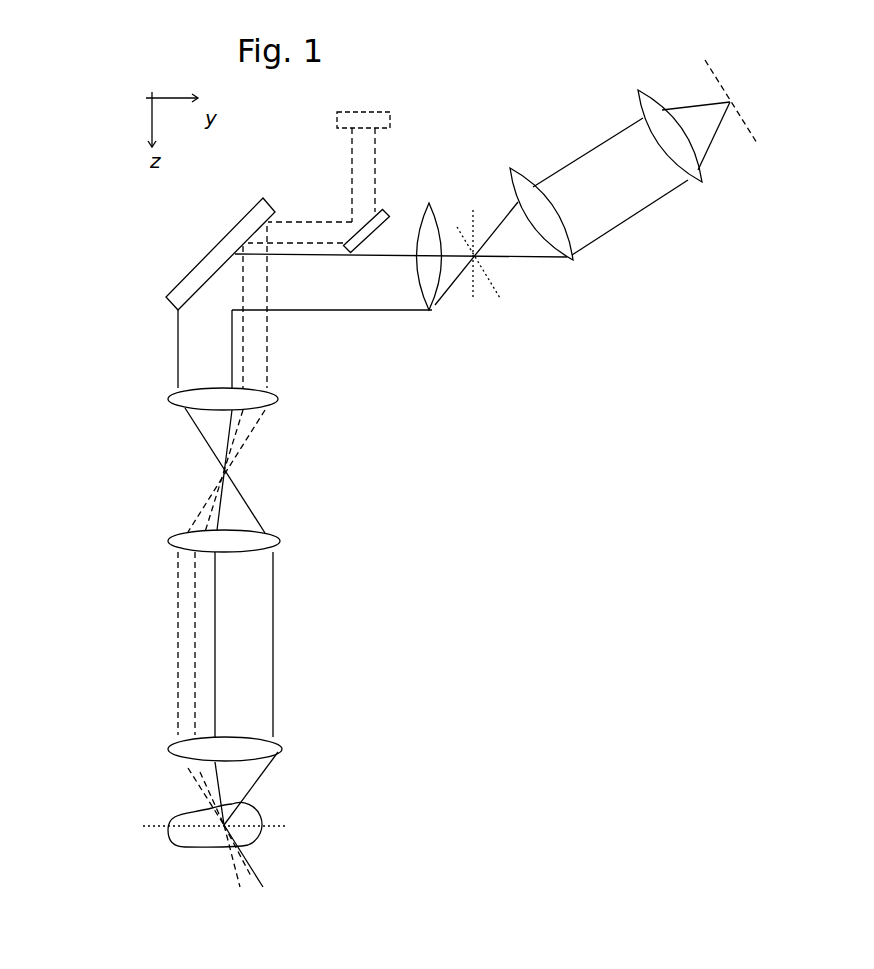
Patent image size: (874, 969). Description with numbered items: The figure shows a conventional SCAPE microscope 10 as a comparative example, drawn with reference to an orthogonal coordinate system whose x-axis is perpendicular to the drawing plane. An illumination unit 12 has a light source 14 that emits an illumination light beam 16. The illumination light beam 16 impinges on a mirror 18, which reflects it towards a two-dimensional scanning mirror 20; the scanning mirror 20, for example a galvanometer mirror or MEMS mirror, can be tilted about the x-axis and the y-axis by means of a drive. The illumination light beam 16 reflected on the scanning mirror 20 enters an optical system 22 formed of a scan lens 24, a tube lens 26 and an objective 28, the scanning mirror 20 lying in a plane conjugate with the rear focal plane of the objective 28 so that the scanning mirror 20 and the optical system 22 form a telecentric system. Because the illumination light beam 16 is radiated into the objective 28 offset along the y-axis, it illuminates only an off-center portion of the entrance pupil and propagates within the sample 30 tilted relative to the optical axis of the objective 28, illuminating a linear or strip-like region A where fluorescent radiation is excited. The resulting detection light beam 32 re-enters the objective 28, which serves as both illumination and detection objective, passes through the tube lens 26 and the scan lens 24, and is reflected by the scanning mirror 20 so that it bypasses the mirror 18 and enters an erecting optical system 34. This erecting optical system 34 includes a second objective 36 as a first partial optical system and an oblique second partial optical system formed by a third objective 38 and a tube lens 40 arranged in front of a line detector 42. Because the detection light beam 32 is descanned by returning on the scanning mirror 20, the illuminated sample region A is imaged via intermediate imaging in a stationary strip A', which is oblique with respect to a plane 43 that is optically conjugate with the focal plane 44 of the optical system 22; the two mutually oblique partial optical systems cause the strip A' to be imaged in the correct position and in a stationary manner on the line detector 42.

The SCAPE microscope 10 is at (395, 438).
The illumination unit 12 is at (391, 93).
The light source 14 is at (337, 125).
The illumination light beam 16 is at (377, 147).
The mirror 18 is at (388, 211).
The 2D-scanning mirror 20 is at (170, 297).
The optical system 22 is at (128, 598).
The scan lens 24 is at (278, 403).
The tube lens 26 is at (277, 545).
The objective 28 is at (282, 753).
The sample 30 is at (257, 810).
The detection light beam 32 is at (277, 658).
The erecting optical system 34 is at (661, 250).
The second objective 36 is at (435, 308).
The third objective 38 is at (573, 262).
The tube lens 40 is at (700, 180).
The line detector 42 is at (753, 140).
The plane 43 is at (472, 208).
The focal plane 44 is at (287, 826).
The illuminated sample region A is at (130, 758).
The stationary strip A' is at (490, 281).